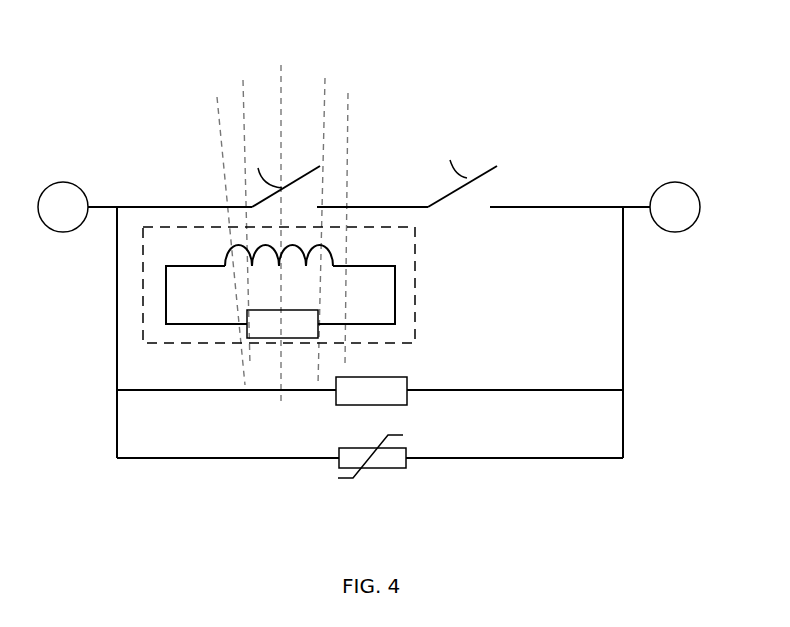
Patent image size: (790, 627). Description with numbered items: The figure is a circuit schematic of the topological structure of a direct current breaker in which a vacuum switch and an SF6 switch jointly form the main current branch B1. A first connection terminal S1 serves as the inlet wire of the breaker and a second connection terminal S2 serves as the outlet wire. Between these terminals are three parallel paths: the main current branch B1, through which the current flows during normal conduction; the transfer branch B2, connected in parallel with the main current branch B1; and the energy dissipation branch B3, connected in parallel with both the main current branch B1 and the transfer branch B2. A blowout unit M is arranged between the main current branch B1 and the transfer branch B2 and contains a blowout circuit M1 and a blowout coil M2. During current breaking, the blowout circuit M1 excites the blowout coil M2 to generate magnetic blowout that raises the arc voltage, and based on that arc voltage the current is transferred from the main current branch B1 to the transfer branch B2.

The first connection terminal S1 is at (63, 207).
The second connection terminal S2 is at (675, 207).
The main current branch B1 is at (141, 206).
The transfer branch B2 is at (370, 391).
The energy dissipation branch B3 is at (477, 457).
The blowout unit M is at (314, 285).
The blowout circuit M1 is at (282, 324).
The blowout coil M2 is at (333, 243).